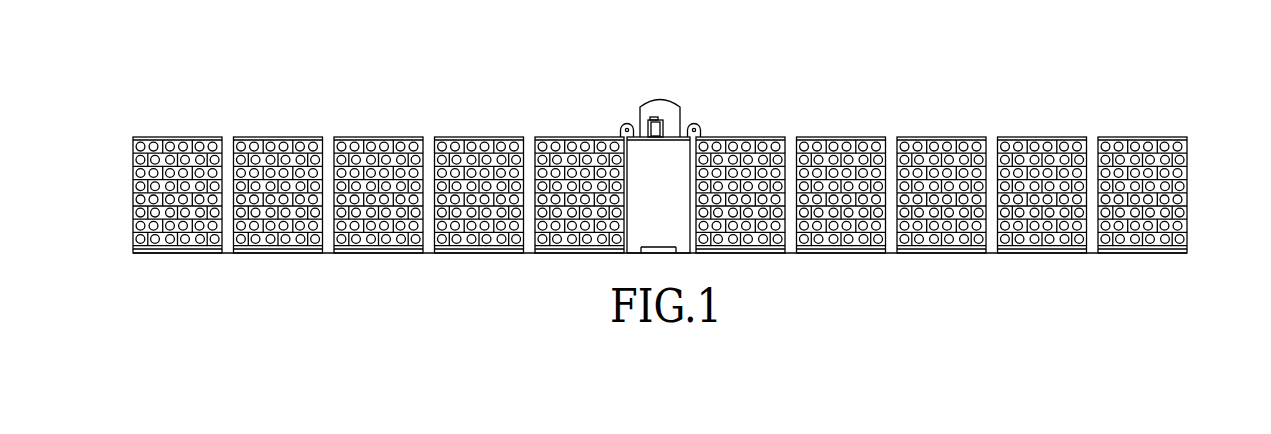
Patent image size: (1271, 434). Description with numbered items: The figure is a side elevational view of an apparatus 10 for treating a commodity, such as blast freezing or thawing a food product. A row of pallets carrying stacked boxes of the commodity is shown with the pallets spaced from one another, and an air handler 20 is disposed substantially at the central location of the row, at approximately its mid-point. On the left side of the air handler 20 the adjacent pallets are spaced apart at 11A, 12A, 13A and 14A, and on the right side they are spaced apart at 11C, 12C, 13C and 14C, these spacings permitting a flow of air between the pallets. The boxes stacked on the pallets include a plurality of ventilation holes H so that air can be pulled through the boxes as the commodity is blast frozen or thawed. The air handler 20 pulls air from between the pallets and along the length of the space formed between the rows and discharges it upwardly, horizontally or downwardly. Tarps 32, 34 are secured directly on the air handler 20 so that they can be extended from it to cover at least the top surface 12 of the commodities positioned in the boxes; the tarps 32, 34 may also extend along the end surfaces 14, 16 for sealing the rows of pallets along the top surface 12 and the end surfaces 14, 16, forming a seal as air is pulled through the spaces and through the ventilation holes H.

The apparatus 10 is at (965, 40).
The top surface 12 is at (1152, 138).
The end surface 14 is at (133, 203).
The end surface 16 is at (1187, 188).
The air handler 20 is at (670, 87).
The tarp 32 is at (622, 126).
The tarp 34 is at (698, 126).
The space between pallets 11A is at (228, 140).
The space between pallets 12A is at (328, 140).
The space between pallets 13A is at (428, 140).
The space between pallets 14A is at (529, 140).
The space between pallets 11C is at (790, 140).
The space between pallets 12C is at (891, 140).
The space between pallets 13C is at (992, 140).
The space between pallets 14C is at (1092, 140).
The ventilation holes H is at (146, 138).